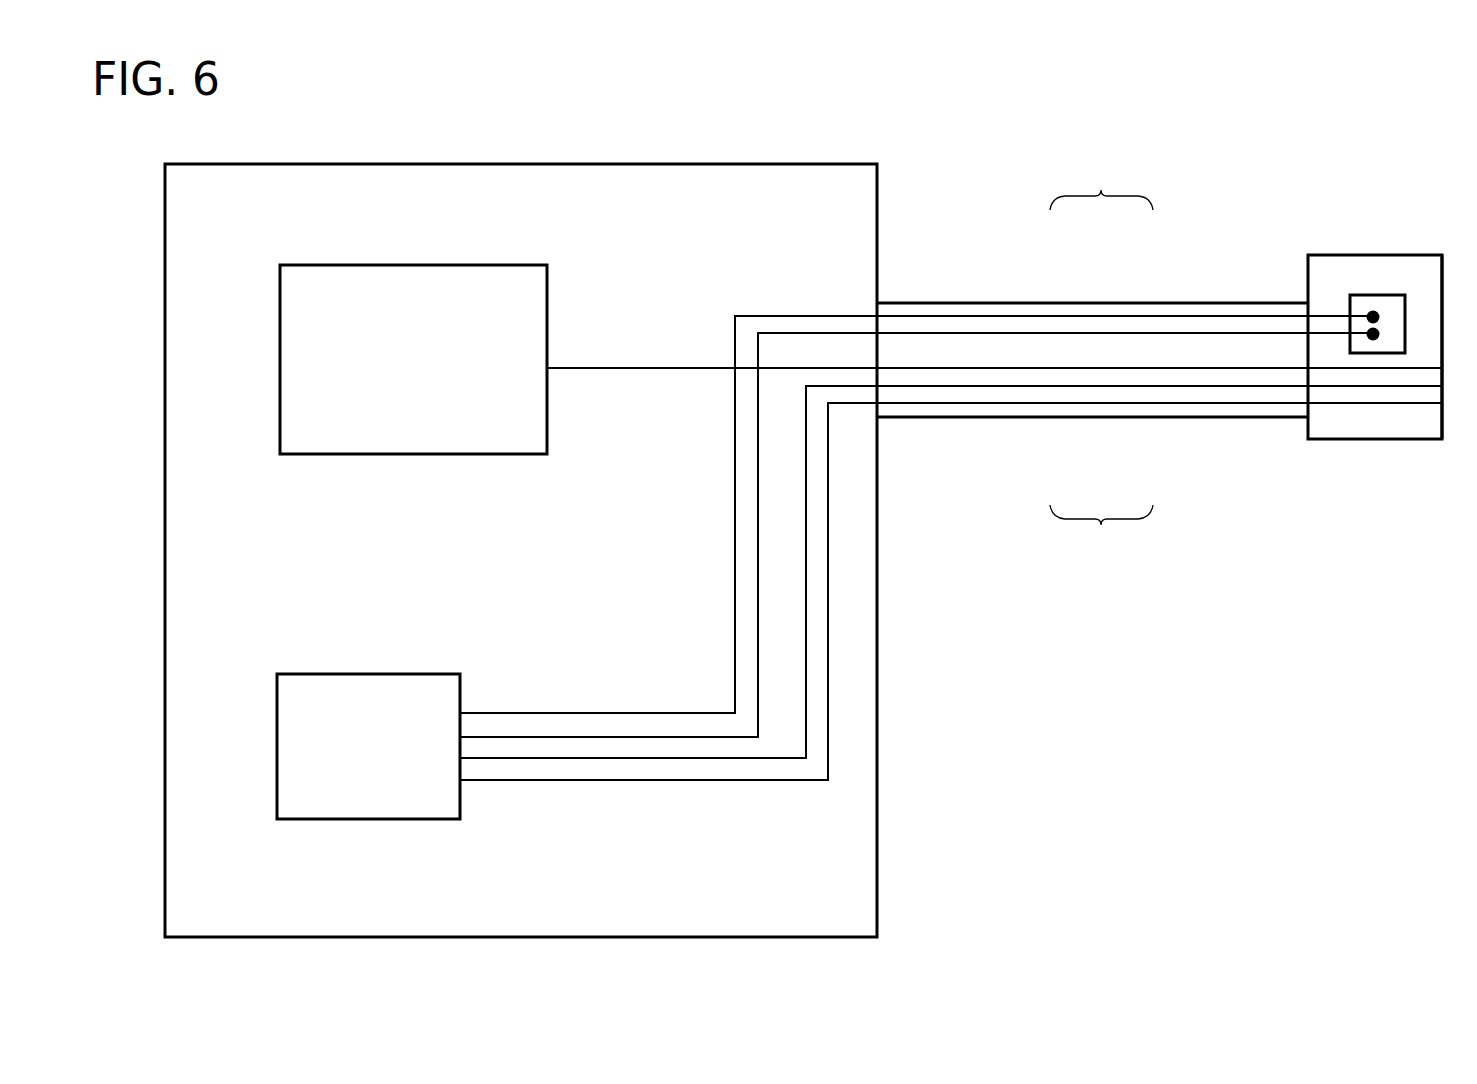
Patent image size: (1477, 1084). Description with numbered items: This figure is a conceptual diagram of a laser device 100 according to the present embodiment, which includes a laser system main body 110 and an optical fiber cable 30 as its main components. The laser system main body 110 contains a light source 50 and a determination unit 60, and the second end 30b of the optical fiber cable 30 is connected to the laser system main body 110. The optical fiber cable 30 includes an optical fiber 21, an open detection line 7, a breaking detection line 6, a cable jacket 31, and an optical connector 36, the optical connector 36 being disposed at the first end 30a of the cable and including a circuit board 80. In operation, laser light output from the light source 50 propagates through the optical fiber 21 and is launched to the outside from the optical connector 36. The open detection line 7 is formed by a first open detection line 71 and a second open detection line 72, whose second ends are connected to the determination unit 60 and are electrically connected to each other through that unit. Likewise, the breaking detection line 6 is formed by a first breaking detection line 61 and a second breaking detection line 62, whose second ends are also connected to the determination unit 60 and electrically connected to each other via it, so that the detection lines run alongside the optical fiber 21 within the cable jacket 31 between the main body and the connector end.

The laser system main body 110 is at (877, 208).
The light source 50 is at (547, 282).
The determination unit 60 is at (460, 686).
The optical fiber cable 30 is at (1207, 186).
The cable jacket 31 is at (1236, 301).
The breaking detection line 6 is at (920, 447).
The first breaking detection line 61 is at (1079, 314).
The second breaking detection line 62 is at (1128, 331).
The open detection line 7 is at (951, 583).
The first open detection line 71 is at (1129, 389).
The second open detection line 72 is at (1081, 406).
The first end 30a is at (1288, 446).
The second end 30b is at (897, 446).
The optical connector 36 is at (1380, 441).
The circuit board 80 is at (1381, 296).
The optical fiber 21 is at (1420, 364).
The laser device 100 is at (1240, 769).